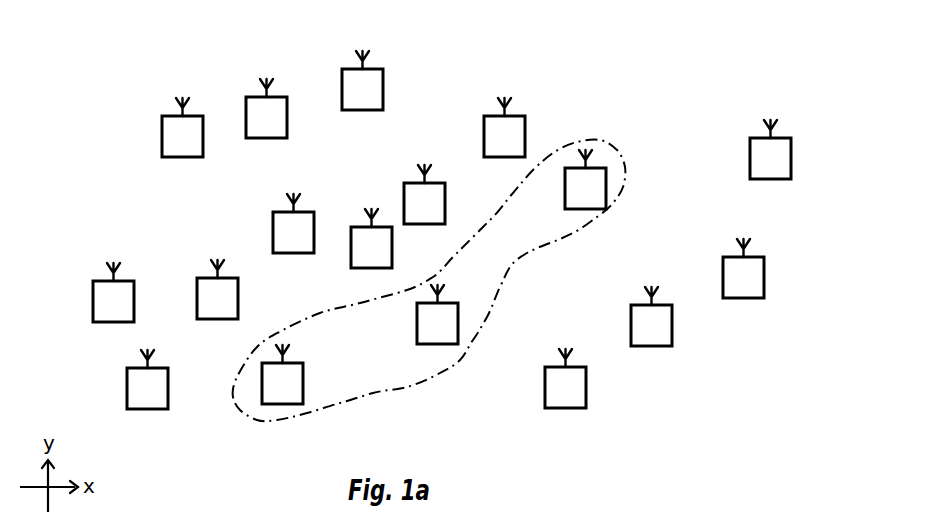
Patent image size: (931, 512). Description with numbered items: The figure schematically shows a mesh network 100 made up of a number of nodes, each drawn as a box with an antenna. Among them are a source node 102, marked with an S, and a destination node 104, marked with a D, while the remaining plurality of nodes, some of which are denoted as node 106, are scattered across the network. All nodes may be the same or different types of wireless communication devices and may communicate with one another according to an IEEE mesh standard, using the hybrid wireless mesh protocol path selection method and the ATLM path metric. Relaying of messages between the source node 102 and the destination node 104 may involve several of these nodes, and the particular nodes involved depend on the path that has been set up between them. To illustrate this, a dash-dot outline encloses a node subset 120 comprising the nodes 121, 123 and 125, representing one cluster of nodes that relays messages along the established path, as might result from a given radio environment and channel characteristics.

The mesh network 100 is at (143, 69).
The source node 102 is at (127, 400).
The destination node 104 is at (484, 128).
The node 106 is at (342, 88).
The node subset 120 is at (242, 412).
The node 121 is at (303, 383).
The node 123 is at (417, 333).
The node 125 is at (605, 188).